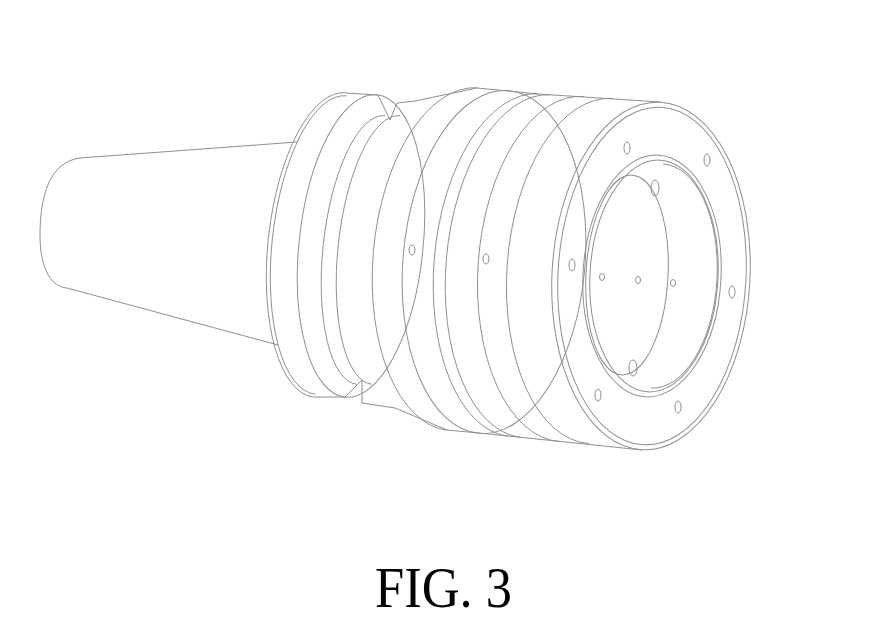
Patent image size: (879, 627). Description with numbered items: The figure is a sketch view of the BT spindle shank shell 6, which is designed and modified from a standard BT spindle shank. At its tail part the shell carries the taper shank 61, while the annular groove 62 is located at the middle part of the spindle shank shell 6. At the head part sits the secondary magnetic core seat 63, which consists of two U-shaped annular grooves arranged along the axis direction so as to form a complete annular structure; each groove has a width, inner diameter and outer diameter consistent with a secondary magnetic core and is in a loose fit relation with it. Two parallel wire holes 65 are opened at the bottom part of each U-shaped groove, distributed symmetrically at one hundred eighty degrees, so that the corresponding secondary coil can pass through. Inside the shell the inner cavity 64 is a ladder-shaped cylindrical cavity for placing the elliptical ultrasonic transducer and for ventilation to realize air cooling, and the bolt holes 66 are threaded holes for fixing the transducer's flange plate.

The spindle shank shell 6 is at (457, 246).
The taper shank 61 is at (240, 200).
The annular groove 62 is at (358, 152).
The secondary magnetic core seat 63 is at (422, 322).
The inner cavity 64 is at (609, 312).
The wire hole 65 is at (484, 258).
The bolt hole 66 is at (673, 283).